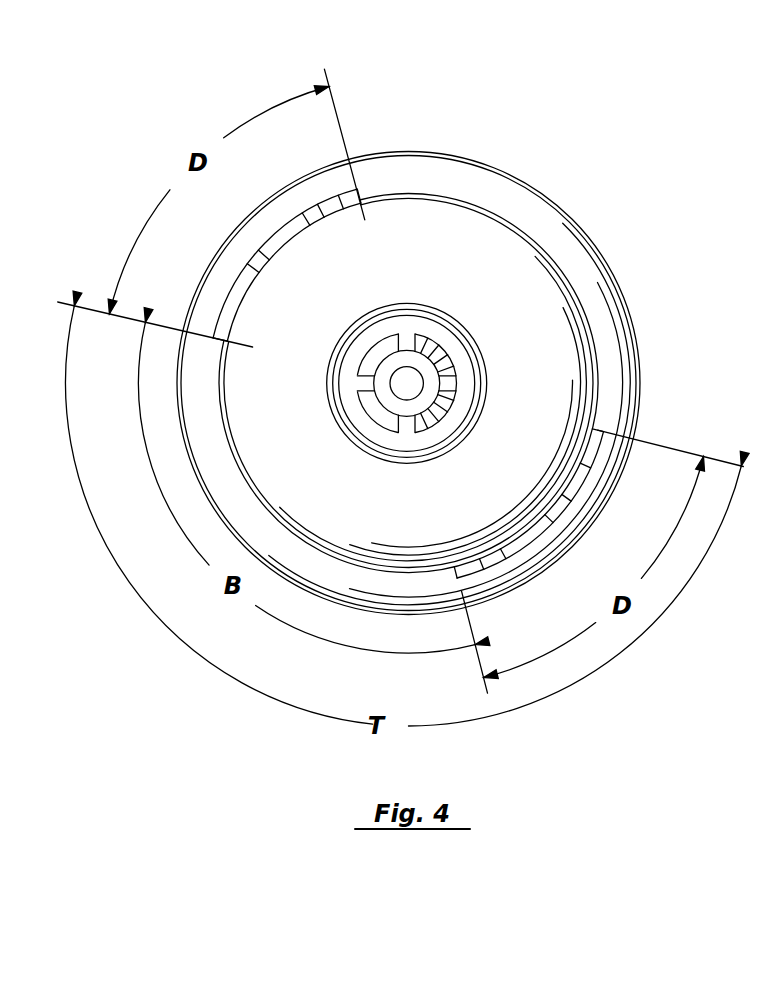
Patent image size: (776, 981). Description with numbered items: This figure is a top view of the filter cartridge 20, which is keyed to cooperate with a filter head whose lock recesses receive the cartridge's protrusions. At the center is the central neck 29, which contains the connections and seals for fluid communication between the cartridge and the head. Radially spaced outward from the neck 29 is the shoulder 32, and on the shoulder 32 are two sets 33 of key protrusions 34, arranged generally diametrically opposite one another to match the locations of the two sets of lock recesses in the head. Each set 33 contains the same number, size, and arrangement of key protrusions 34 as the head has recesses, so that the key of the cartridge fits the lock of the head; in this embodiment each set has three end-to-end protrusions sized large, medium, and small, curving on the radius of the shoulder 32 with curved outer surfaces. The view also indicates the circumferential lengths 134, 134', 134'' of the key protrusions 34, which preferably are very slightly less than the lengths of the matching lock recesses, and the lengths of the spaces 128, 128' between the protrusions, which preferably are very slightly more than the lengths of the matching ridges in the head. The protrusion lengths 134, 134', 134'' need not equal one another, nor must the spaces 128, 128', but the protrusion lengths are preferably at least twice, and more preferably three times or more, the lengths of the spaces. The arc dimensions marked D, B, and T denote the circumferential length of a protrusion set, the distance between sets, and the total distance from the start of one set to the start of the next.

The filter cartridge 20 is at (528, 176).
The central neck 29 is at (433, 297).
The shoulder 32 is at (547, 253).
The set of key protrusions 33 is at (257, 197).
The key protrusion 34 is at (333, 202).
The space between protrusions 128 is at (296, 275).
The space between protrusions 128' is at (354, 234).
The length of key protrusion 134 is at (265, 322).
The length of key protrusion 134' is at (338, 255).
The length of key protrusion 134'' is at (390, 219).